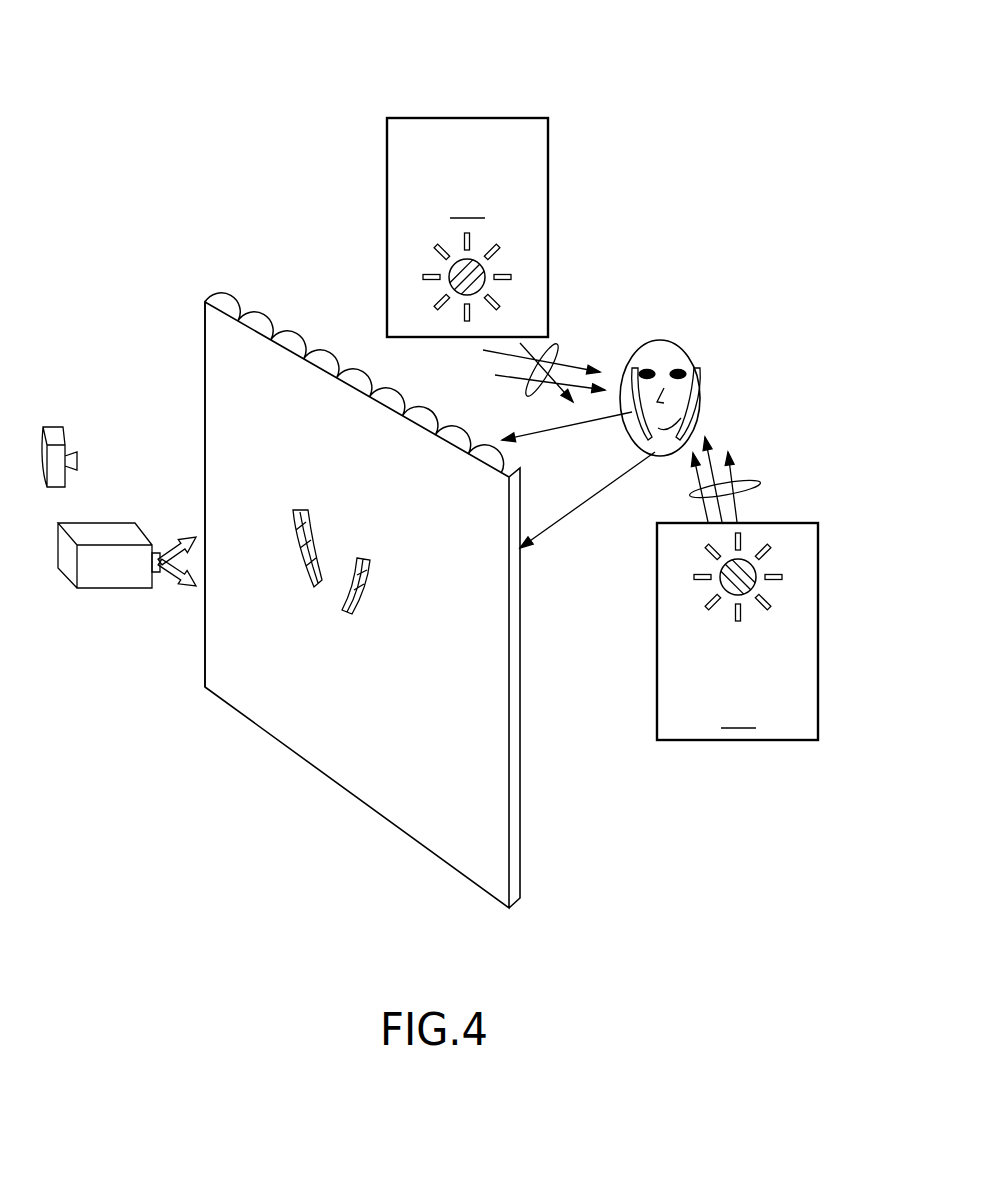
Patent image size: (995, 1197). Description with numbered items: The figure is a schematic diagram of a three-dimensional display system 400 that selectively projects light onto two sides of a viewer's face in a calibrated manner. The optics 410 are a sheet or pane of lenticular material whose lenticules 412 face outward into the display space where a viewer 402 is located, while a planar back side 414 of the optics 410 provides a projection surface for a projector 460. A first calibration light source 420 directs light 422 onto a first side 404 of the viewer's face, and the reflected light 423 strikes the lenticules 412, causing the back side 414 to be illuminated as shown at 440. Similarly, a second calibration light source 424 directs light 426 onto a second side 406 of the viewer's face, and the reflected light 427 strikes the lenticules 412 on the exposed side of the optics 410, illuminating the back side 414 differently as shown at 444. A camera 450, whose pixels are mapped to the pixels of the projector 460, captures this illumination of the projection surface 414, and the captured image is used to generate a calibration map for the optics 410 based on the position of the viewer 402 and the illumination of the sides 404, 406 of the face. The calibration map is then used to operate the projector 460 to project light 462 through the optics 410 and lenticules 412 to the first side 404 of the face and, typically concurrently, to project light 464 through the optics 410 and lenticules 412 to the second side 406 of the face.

The 3D display system 400 is at (118, 157).
The viewer 402 is at (683, 332).
The first side of the viewer's face 404 is at (697, 402).
The second side of the viewer's face 406 is at (632, 430).
The optics 410 is at (232, 268).
The lenticules 412 is at (306, 345).
The planar back side 414 is at (217, 327).
The first calibration light source 420 is at (737, 631).
The light 422 is at (752, 483).
The reflected light 423 is at (575, 508).
The second calibration light source 424 is at (467, 227).
The light 426 is at (522, 395).
The reflected light 427 is at (553, 430).
The illumination 440 is at (365, 600).
The illumination 444 is at (310, 540).
The camera 450 is at (52, 428).
The projector 460 is at (82, 615).
The projected light 462 is at (170, 580).
The projected light 464 is at (168, 552).